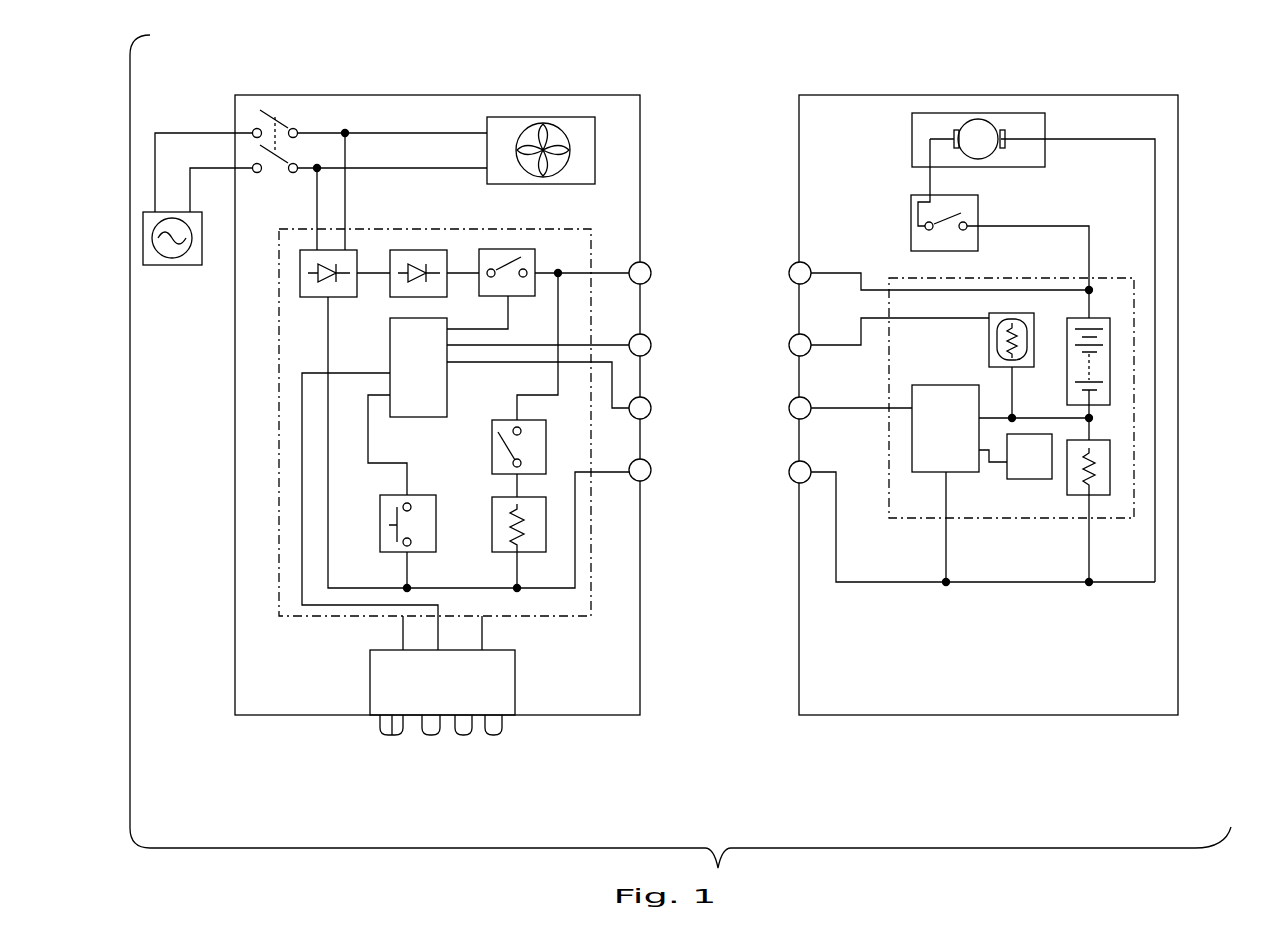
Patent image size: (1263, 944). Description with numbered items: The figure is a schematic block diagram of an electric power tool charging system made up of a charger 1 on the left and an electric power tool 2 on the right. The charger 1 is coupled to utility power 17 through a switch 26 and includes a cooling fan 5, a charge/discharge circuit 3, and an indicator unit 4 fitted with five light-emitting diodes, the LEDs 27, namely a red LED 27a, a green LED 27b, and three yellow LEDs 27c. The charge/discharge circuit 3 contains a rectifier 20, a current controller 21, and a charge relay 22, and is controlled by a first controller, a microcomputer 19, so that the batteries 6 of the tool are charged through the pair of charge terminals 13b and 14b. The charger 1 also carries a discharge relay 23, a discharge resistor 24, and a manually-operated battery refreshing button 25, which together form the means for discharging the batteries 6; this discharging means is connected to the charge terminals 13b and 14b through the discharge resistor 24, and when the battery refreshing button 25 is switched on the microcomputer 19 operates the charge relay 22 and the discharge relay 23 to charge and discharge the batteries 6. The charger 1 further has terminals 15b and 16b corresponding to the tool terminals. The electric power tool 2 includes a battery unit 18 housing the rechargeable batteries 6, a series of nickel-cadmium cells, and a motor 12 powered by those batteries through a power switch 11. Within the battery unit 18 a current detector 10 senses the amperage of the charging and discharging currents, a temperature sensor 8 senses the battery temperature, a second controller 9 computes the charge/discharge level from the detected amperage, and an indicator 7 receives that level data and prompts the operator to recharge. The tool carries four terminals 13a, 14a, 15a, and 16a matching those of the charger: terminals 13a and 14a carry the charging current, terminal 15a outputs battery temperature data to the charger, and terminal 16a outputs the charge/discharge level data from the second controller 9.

The charger 1 is at (393, 95).
The electric power tool 2 is at (910, 95).
The charge/discharge circuit 3 is at (279, 480).
The indicator unit 4 is at (508, 694).
The cooling fan 5 is at (572, 127).
The rechargeable batteries 6 is at (1111, 368).
The indicator 7 is at (1030, 480).
The temperature sensor 8 is at (1018, 313).
The second controller 9 is at (935, 385).
The current detector 10 is at (1112, 465).
The power switch 11 is at (911, 215).
The motor 12 is at (1025, 113).
The terminal 13a is at (790, 265).
The charge terminal 13b is at (648, 265).
The terminal 14a is at (790, 478).
The charge terminal 14b is at (650, 480).
The terminal 15a is at (790, 342).
The charger terminal 15b is at (651, 350).
The terminal 16a is at (789, 408).
The charger terminal 16b is at (649, 415).
The utility power 17 is at (172, 266).
The battery unit 18 is at (1135, 303).
The microcomputer 19 is at (422, 417).
The rectifier 20 is at (315, 297).
The current controller 21 is at (410, 250).
The charge relay 22 is at (500, 257).
The discharge relay 23 is at (503, 425).
The discharge resistor 24 is at (546, 526).
The battery refreshing button 25 is at (436, 533).
The power switch 26 is at (268, 113).
The LEDs 27 is at (425, 784).
The red LED 27a is at (382, 735).
The green LED 27b is at (404, 735).
The yellow LEDs 27c is at (478, 758).